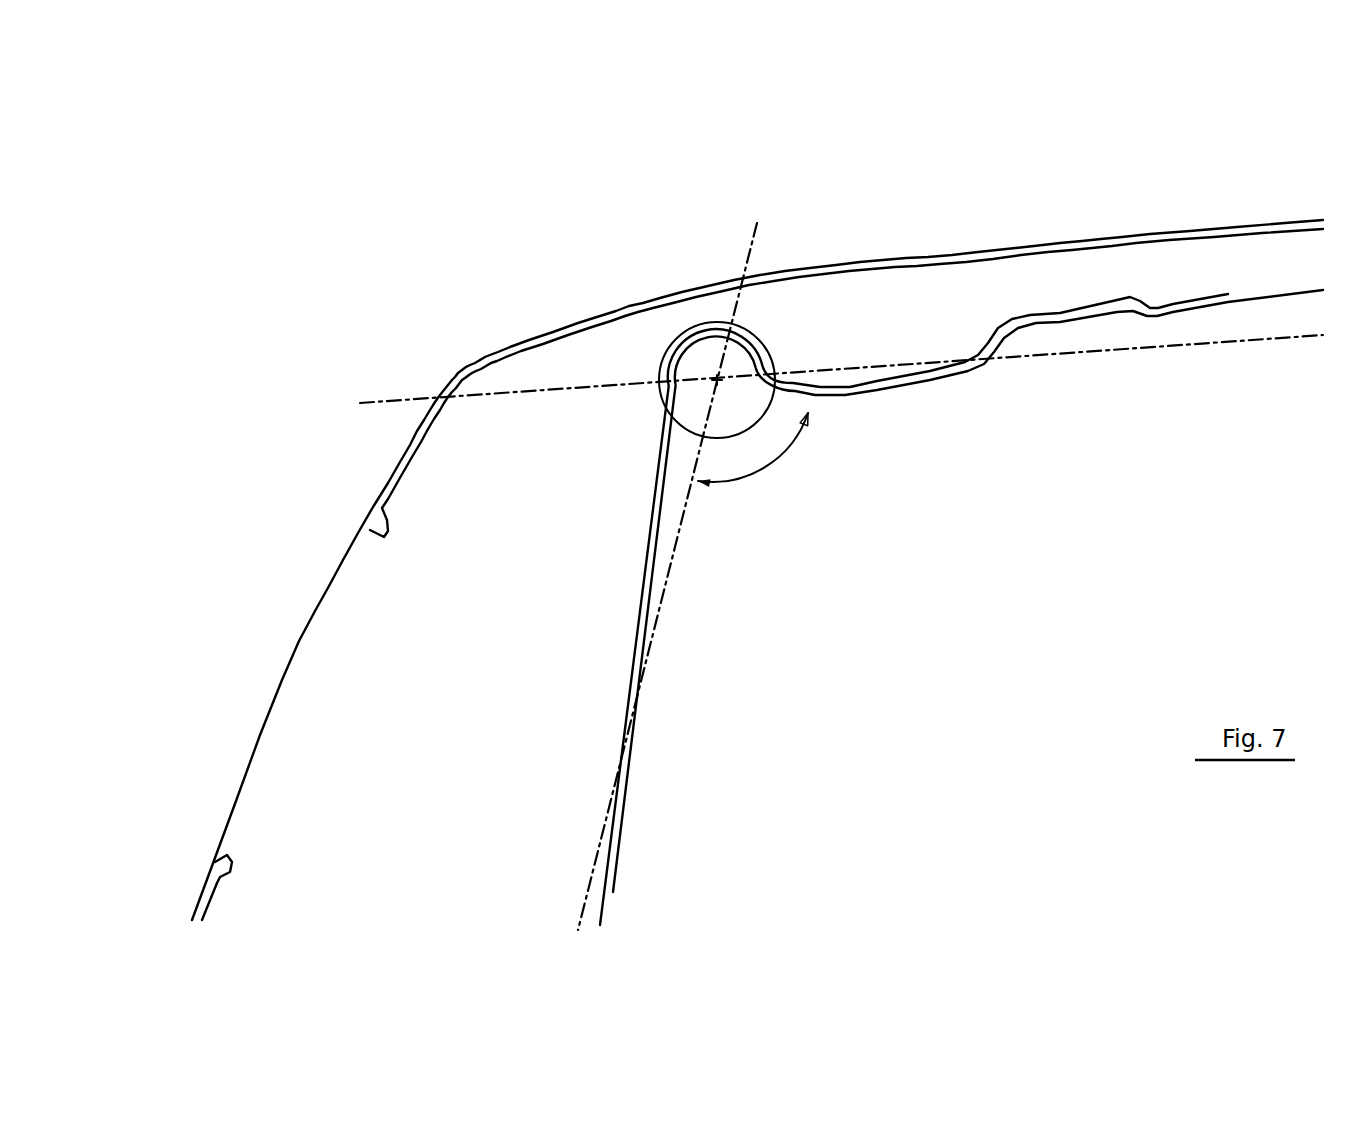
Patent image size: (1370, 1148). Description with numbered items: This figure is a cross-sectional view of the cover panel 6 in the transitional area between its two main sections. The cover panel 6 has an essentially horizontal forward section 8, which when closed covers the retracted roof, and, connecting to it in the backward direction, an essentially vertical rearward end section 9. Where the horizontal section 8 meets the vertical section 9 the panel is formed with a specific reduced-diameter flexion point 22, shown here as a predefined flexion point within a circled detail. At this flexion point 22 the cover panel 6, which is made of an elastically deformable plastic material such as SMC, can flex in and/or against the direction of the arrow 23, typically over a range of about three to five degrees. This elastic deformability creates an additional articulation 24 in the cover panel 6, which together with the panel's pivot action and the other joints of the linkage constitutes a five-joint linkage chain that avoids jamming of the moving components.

The cover panel 6 is at (1178, 222).
The essentially horizontal forward section 8 is at (950, 242).
The essentially vertical rearward end section 9 is at (273, 667).
The reduced-diameter flexion point 22 is at (701, 322).
The arrow 23 is at (775, 467).
The additional articulation 24 is at (585, 295).